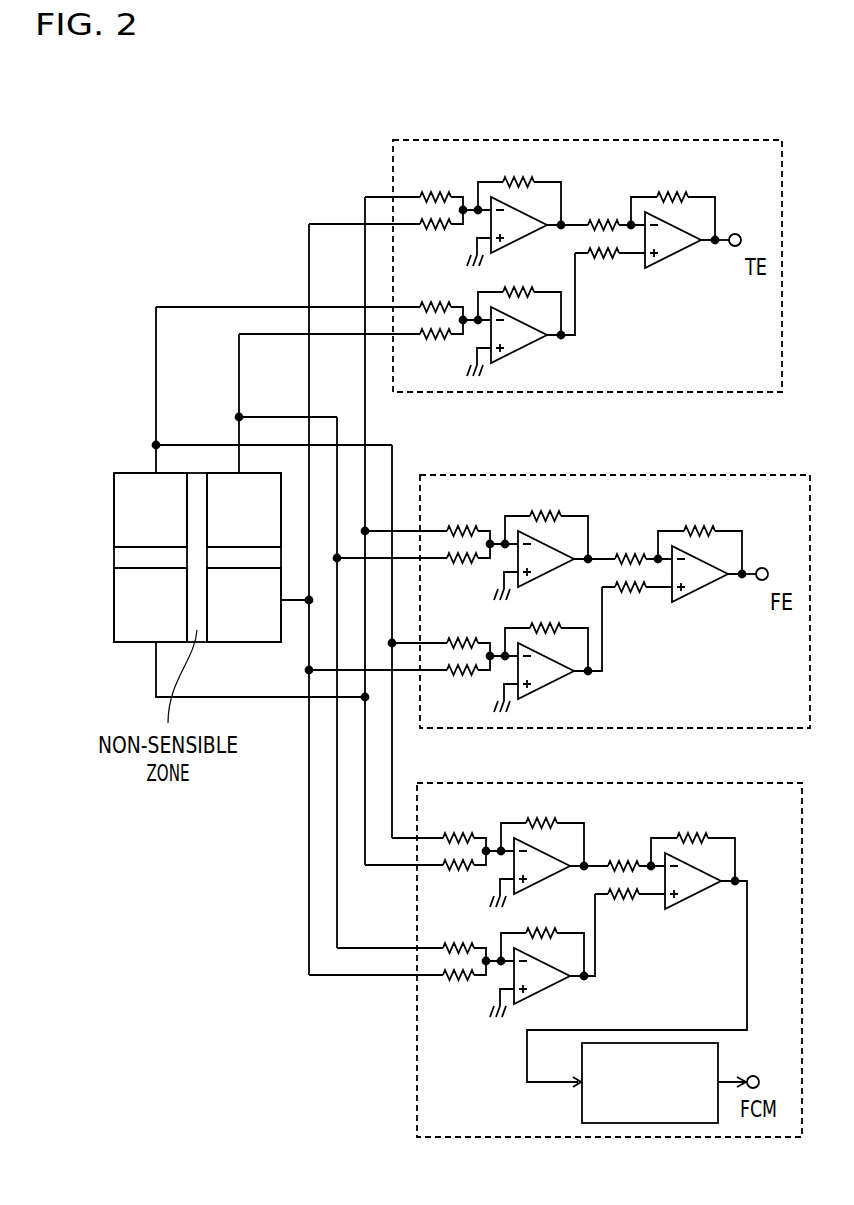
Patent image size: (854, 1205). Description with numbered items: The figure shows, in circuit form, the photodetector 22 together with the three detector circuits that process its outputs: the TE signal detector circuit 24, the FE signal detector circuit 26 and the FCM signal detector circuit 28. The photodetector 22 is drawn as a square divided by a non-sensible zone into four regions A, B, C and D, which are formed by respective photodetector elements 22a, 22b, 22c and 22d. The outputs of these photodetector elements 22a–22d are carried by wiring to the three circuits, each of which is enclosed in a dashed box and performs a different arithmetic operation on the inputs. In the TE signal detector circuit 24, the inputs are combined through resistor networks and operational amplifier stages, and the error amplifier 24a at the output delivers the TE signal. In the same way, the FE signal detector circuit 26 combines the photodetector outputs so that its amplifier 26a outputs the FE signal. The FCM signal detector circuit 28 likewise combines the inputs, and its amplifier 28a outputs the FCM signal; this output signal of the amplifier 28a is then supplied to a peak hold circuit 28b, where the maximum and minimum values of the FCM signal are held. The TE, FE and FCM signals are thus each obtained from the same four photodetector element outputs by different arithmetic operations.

The photodetector 22 is at (127, 457).
The photodetector element 22a is at (112, 523).
The photodetector element 22b is at (112, 620).
The photodetector element 22c is at (253, 643).
The photodetector element 22d is at (253, 473).
The TE signal detector circuit 24 is at (712, 362).
The amplifier 24a is at (669, 258).
The FE signal detector circuit 26 is at (739, 698).
The amplifier 26a is at (696, 592).
The FCM signal detector circuit 28 is at (789, 838).
The amplifier 28a is at (693, 902).
The peak hold circuit 28b is at (720, 1066).